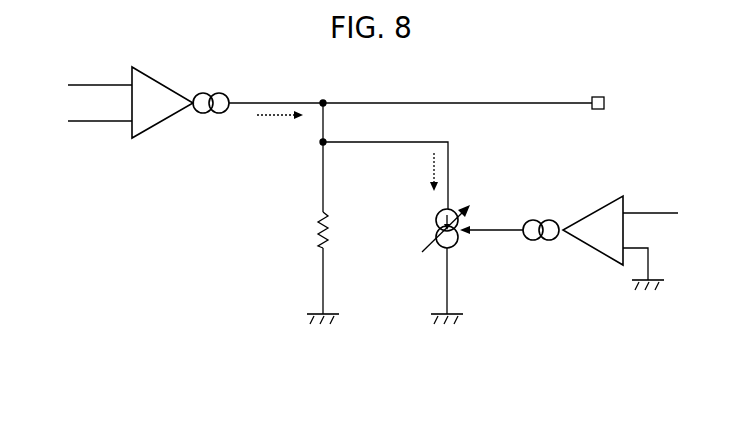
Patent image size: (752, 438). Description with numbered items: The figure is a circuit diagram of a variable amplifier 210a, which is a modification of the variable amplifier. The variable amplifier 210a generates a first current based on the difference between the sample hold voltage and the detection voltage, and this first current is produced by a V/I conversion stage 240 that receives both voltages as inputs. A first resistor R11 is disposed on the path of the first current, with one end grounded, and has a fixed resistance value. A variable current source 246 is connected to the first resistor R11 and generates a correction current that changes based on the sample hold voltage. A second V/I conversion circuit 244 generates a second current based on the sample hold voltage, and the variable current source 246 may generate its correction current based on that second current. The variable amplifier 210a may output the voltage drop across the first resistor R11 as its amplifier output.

The variable amplifier 210a is at (405, 406).
The amplifier 240 is at (172, 125).
The second V/I conversion circuit 244 is at (584, 244).
The variable current source 246 is at (430, 228).
The first resistor R11 is at (316, 228).